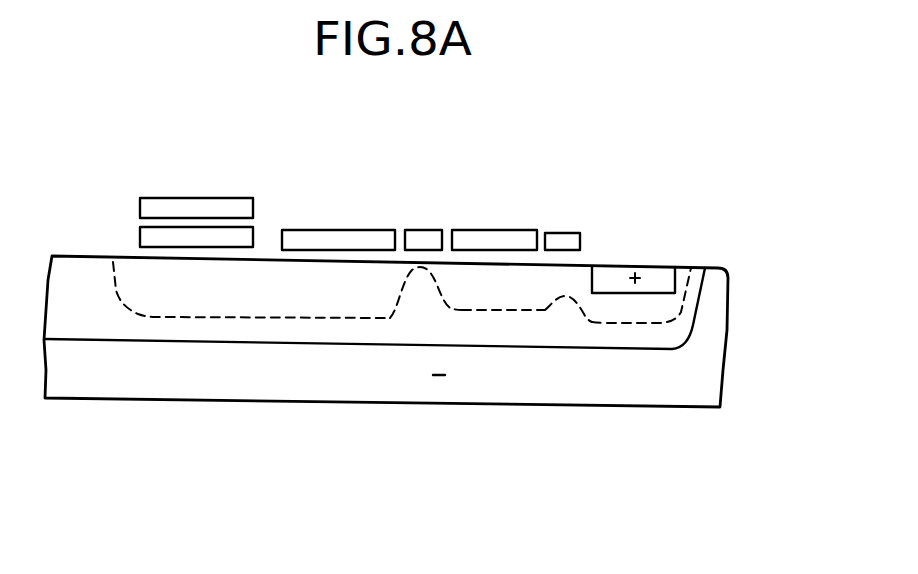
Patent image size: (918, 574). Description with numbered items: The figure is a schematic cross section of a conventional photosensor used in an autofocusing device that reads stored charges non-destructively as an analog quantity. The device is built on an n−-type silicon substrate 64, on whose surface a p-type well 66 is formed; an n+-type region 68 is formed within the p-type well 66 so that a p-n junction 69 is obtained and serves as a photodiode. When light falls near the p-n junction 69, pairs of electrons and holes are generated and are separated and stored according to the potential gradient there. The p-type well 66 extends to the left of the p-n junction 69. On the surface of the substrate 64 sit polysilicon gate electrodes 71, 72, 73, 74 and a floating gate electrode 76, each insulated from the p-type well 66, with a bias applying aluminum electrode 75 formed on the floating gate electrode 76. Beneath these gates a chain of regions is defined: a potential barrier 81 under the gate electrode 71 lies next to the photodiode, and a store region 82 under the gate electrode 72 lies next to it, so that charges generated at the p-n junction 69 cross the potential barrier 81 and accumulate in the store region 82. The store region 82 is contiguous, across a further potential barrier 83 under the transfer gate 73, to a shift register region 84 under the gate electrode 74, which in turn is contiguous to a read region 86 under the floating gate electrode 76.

The n−-type silicon substrate 64 is at (703, 382).
The p-type well 66 is at (685, 333).
The n+-type region 68 is at (648, 271).
The p-n junction 69 is at (683, 269).
The gate electrode 71 is at (566, 233).
The gate electrode 72 is at (494, 233).
The transfer gate 73 is at (415, 232).
The gate electrode 74 is at (332, 235).
The bias applying aluminum electrode 75 is at (237, 203).
The floating gate electrode 76 is at (252, 240).
The potential barrier 81 is at (567, 312).
The store region 82 is at (505, 328).
The potential barrier 83 is at (421, 288).
The shift register region 84 is at (332, 326).
The read region 86 is at (195, 327).